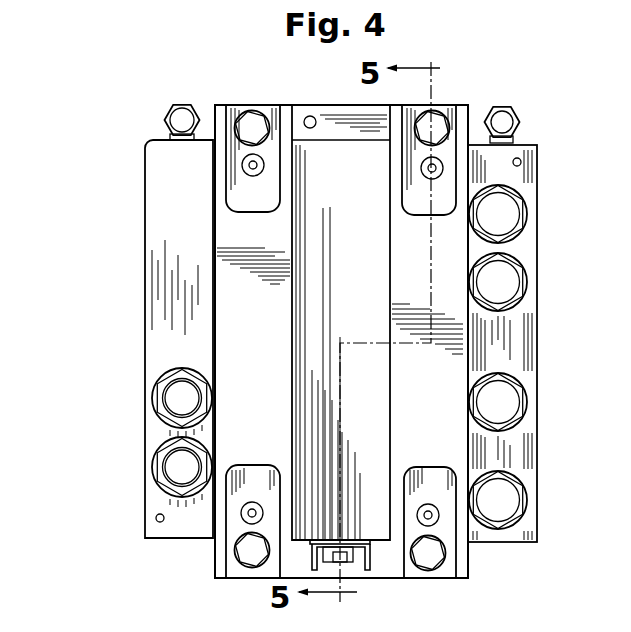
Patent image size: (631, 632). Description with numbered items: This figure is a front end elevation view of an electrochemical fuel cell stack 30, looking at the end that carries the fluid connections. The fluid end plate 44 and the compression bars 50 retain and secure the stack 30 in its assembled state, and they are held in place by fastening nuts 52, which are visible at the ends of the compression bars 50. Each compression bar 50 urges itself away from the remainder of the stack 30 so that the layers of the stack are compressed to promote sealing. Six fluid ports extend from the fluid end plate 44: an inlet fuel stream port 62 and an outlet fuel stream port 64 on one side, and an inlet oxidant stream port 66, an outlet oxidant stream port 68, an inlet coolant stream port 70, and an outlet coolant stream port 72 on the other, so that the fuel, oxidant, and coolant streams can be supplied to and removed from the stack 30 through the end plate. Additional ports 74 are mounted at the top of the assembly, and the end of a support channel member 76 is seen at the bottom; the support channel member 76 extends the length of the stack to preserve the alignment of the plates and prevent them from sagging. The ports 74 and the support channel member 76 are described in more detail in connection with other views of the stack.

The stack 30 is at (512, 550).
The fluid end plate 44 is at (532, 157).
The compression bars 50 is at (400, 230).
The fastening nuts 52 is at (414, 127).
The inlet fuel stream port 62 is at (170, 398).
The outlet fuel stream port 64 is at (170, 467).
The inlet oxidant stream port 66 is at (513, 403).
The outlet oxidant stream port 68 is at (512, 500).
The inlet coolant stream port 70 is at (510, 210).
The outlet coolant stream port 72 is at (515, 282).
The ports 74 is at (183, 117).
The support channel member 76 is at (367, 573).